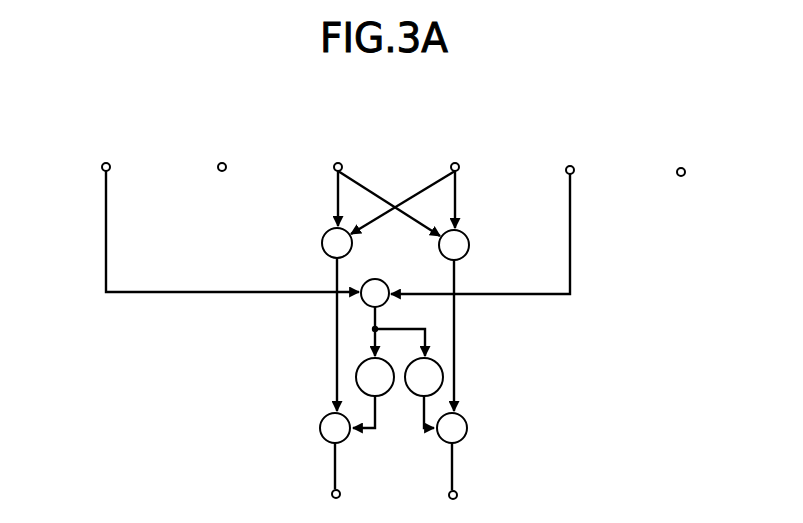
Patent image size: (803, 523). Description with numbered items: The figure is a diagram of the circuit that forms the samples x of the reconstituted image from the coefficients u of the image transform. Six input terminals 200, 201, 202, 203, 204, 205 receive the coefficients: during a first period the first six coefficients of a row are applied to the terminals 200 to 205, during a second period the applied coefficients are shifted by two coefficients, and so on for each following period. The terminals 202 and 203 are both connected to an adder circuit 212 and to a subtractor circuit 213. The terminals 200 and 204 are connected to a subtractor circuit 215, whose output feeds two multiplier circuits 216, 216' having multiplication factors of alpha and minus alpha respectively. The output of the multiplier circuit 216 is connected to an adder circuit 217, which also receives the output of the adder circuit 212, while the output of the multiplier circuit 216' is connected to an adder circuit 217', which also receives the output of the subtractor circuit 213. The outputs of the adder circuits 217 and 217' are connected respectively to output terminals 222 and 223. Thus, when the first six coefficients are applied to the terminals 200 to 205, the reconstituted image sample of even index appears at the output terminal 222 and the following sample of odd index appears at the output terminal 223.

The terminal 200 is at (107, 163).
The terminal 201 is at (224, 163).
The terminal 202 is at (343, 146).
The terminal 203 is at (453, 163).
The terminal 204 is at (569, 166).
The terminal 205 is at (680, 168).
The adder circuit 212 is at (321, 243).
The subtractor circuit 213 is at (469, 245).
The subtractor circuit 215 is at (376, 279).
The multiplier circuit 216 is at (336, 383).
The multiplier circuit 216' is at (458, 380).
The adder circuit 217 is at (311, 445).
The adder circuit 217' is at (480, 447).
The output terminal 222 is at (331, 494).
The output terminal 223 is at (457, 495).